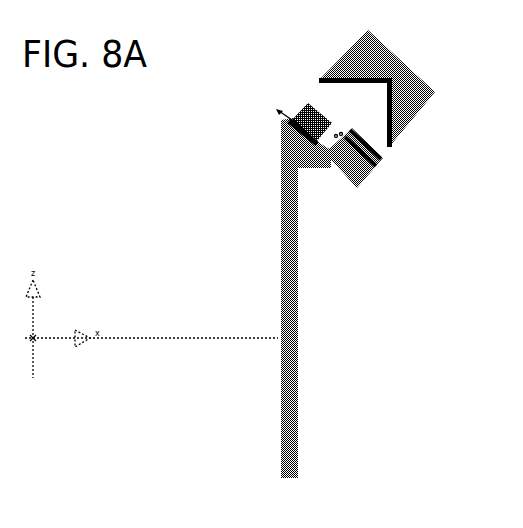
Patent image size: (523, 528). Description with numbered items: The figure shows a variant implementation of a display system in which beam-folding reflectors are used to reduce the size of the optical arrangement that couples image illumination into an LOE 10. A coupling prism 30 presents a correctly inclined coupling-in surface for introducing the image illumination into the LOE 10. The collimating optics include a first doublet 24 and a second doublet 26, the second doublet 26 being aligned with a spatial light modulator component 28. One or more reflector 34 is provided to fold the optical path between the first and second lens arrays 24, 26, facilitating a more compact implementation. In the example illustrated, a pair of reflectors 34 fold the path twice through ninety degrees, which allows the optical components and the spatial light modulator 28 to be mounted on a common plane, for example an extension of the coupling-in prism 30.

The LOE 10 is at (299, 429).
The first doublet 24 is at (298, 110).
The second doublet 26 is at (373, 167).
The spatial light modulator component 28 is at (347, 182).
The coupling prism 30 is at (282, 155).
The reflector 34 is at (375, 73).